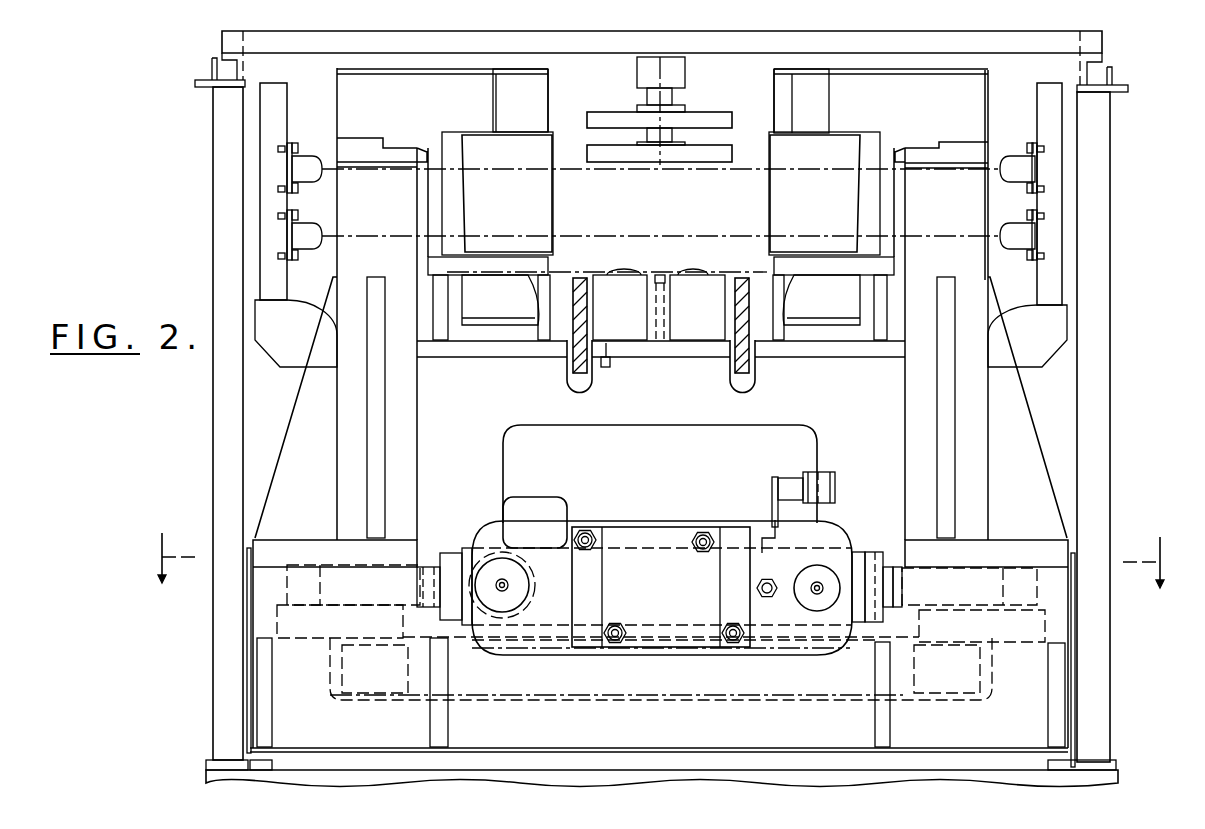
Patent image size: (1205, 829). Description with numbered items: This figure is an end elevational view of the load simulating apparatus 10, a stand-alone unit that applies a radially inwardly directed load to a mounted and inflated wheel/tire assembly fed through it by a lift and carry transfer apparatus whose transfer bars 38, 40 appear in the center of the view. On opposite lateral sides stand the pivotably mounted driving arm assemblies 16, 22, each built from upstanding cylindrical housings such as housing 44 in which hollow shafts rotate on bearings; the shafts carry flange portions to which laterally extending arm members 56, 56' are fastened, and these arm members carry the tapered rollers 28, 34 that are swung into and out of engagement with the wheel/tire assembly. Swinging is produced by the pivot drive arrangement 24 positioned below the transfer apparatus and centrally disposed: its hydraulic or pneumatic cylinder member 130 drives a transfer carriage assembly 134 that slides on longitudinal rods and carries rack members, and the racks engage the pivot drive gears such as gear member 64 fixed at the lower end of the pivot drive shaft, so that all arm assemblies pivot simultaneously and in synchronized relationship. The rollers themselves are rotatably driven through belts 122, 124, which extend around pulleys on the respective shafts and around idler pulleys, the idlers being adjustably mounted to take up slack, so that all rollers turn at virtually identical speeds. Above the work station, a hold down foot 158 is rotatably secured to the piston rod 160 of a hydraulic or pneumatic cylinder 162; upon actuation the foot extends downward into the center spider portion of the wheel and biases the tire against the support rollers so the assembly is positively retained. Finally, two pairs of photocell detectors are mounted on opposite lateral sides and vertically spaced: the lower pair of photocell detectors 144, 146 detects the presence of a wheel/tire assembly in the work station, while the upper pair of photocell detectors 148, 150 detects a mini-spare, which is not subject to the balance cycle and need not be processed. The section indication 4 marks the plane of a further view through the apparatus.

The load simulating apparatus 10 is at (1148, 274).
The driving arm assembly 16 is at (422, 112).
The driving arm assembly 22 is at (907, 114).
The pivot drive arrangement 24 is at (480, 525).
The roller 28 is at (543, 201).
The roller 34 is at (772, 207).
The transfer bar 38 is at (745, 365).
The transfer bar 40 is at (578, 362).
The cylindrical housing 44 is at (404, 406).
The arm member 56 is at (496, 100).
The arm member 56' is at (799, 101).
The drive gear member 64 is at (342, 585).
The belt 122 is at (309, 636).
The belt 124 is at (1030, 628).
The cylinder member 130 is at (668, 603).
The transfer carriage assembly 134 is at (625, 545).
The photocell detector 144 is at (312, 232).
The photocell detector 146 is at (1010, 233).
The photocell detector 148 is at (308, 158).
The photocell detector 150 is at (1012, 160).
The hold down foot 158 is at (596, 120).
The piston rod 160 is at (668, 99).
The cylinder 162 is at (680, 68).
The section line 4- 4 is at (652, 560).